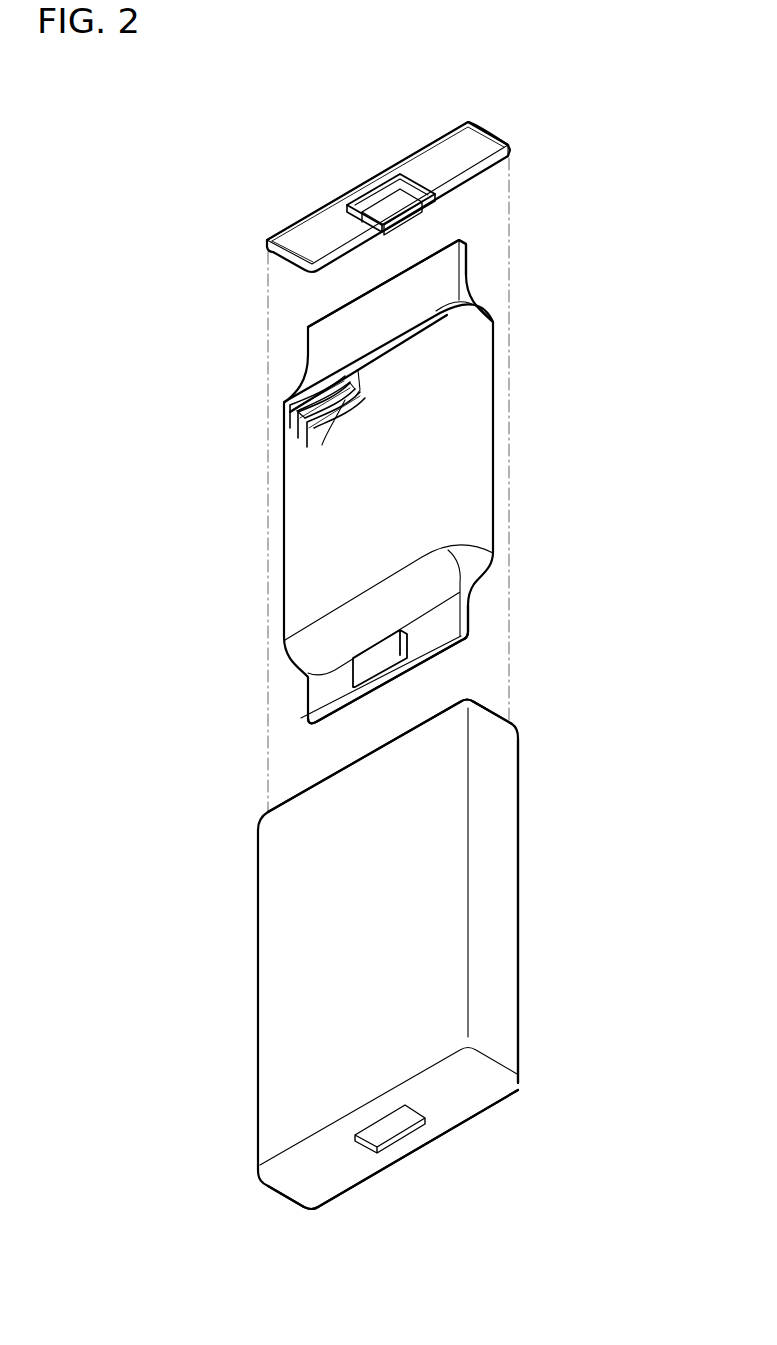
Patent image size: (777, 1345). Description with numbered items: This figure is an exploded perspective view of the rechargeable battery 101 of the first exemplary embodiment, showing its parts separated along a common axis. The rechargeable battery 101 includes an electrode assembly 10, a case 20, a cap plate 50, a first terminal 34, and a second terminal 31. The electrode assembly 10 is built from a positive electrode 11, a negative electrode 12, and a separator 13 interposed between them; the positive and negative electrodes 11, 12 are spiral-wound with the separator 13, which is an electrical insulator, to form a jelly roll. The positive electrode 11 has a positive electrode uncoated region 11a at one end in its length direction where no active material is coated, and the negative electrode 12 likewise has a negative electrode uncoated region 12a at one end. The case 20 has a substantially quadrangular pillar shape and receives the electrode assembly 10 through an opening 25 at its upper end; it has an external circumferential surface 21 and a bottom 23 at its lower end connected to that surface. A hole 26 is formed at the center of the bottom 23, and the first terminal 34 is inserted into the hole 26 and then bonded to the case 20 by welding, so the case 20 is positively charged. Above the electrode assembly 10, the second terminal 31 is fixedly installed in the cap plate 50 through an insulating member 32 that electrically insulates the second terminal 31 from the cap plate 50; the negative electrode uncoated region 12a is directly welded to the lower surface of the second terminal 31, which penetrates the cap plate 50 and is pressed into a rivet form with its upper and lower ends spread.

The rechargeable battery 101 is at (261, 108).
The cap plate 50 is at (497, 131).
The second terminal 31 is at (363, 207).
The insulating member 32 is at (388, 186).
The electrode assembly 10 is at (495, 439).
The positive electrode 11 is at (320, 437).
The negative electrode 12 is at (297, 440).
The separator 13 is at (291, 430).
The negative electrode uncoated region 12a is at (467, 252).
The positive electrode uncoated region 11a is at (480, 576).
The first terminal 34 is at (368, 661).
The case 20 is at (520, 884).
The external circumferential surface 21 is at (512, 947).
The bottom 23 is at (493, 1092).
The opening 25 is at (490, 710).
The hole 26 is at (393, 1128).